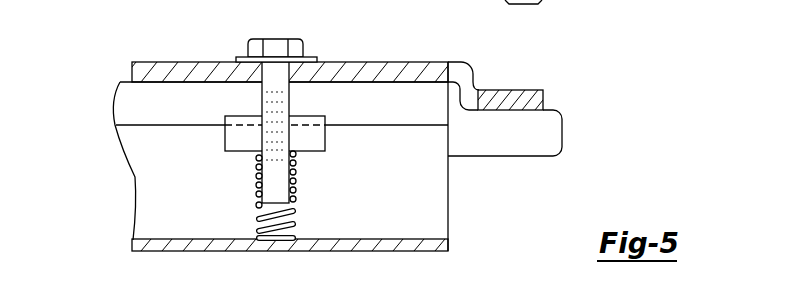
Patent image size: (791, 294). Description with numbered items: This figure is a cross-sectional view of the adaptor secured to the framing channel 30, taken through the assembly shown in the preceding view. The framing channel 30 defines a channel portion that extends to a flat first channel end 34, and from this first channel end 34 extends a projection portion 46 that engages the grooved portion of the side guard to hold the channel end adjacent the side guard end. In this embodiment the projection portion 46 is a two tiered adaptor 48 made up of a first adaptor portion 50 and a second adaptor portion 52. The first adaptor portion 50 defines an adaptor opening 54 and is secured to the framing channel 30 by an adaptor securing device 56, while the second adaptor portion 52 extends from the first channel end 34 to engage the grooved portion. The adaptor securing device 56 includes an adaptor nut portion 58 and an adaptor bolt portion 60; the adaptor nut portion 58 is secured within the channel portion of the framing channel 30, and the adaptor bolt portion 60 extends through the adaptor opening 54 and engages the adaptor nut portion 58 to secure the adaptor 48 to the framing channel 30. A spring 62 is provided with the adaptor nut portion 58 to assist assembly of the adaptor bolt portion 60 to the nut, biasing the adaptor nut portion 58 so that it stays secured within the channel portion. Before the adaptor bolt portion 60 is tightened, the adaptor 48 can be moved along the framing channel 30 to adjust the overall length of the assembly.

The framing channel 30 is at (140, 175).
The first channel end 34 is at (448, 205).
The projection portion 46 is at (562, 133).
The adaptor 48 is at (475, 62).
The first adaptor portion 50 is at (383, 62).
The second adaptor portion 52 is at (532, 90).
The adaptor opening 54 is at (263, 62).
The adaptor securing device 56 is at (312, 53).
The adaptor nut portion 58 is at (325, 142).
The adaptor bolt portion 60 is at (278, 39).
The spring 62 is at (256, 219).